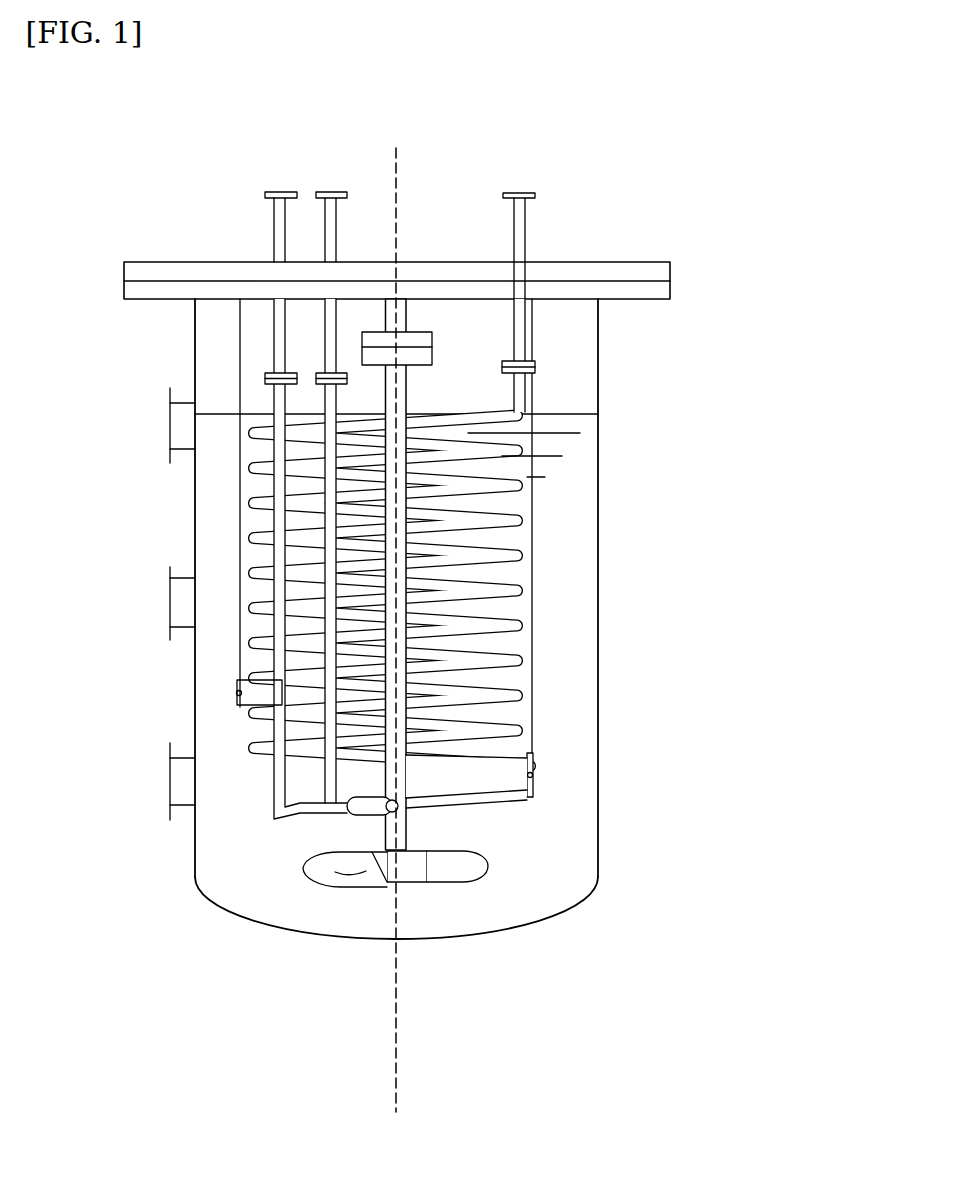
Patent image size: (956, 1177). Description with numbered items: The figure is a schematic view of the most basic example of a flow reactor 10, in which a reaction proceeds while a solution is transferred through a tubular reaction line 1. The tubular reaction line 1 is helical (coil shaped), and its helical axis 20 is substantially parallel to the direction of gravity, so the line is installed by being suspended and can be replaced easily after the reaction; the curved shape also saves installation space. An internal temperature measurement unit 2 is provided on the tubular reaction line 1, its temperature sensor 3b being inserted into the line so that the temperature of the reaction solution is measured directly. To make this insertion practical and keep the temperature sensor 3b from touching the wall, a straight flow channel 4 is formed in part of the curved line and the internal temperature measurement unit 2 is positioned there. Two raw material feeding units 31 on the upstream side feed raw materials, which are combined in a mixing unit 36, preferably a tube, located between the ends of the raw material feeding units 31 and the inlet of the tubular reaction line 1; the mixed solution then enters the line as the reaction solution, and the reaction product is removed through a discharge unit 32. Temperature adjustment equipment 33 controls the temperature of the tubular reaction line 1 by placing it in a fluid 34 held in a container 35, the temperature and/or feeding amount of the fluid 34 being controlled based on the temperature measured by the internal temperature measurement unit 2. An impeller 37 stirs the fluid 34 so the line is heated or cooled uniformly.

The flow reactor 10 is at (669, 228).
The tubular reaction line 1 is at (530, 480).
The internal temperature measurement unit 2 is at (238, 560).
The temperature sensor 3b is at (237, 682).
The straight flow channel 4 is at (236, 757).
The helical axis 20 is at (397, 727).
The raw material feeding unit 31 is at (331, 193).
The discharge unit 32 is at (519, 212).
The temperature adjustment equipment 33 is at (200, 357).
The fluid 34 is at (217, 472).
The container 35 is at (193, 727).
The mixing unit 36 is at (277, 831).
The impeller 37 is at (453, 873).